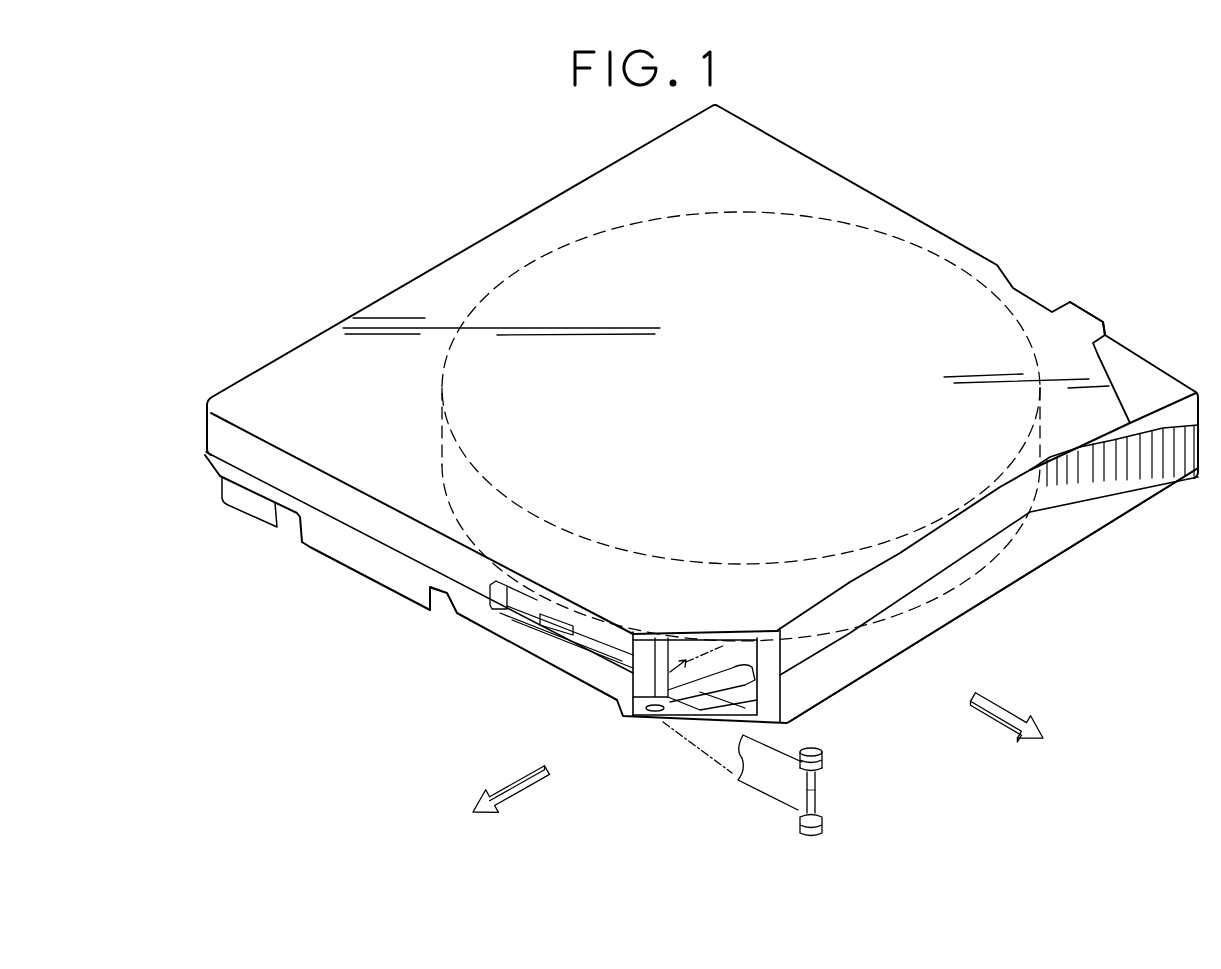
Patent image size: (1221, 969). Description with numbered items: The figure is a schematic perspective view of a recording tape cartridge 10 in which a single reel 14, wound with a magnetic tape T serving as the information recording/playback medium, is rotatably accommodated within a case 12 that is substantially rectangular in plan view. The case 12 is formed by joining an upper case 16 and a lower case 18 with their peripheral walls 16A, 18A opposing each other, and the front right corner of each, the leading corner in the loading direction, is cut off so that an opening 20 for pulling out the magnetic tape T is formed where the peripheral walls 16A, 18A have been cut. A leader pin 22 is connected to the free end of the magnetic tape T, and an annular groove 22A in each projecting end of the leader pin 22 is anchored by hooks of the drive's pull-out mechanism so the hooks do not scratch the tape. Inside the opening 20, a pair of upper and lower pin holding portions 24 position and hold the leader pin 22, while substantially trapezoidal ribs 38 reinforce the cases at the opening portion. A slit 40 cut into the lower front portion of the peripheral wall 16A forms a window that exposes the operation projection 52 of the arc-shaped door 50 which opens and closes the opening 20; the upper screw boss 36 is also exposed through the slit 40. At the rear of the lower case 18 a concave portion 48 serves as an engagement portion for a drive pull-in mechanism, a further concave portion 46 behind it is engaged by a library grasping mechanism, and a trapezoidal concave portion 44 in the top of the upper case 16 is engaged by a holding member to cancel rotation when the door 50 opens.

The recording tape cartridge 10 is at (1006, 72).
The case 12 is at (742, 168).
The reel 14 is at (583, 256).
The upper case 16 is at (1058, 490).
The peripheral wall of upper case 16A is at (205, 422).
The lower case 18 is at (1035, 555).
The peripheral wall of lower case 18A is at (345, 555).
The opening 20 is at (645, 717).
The leader pin 22 is at (832, 741).
The annular groove 22A is at (822, 778).
The pin holding portion 24 is at (747, 673).
The screw boss 36 is at (627, 717).
The rib 38 is at (663, 733).
The slit 40 is at (565, 672).
The concave portion 44 is at (1033, 300).
The concave portion 46 is at (296, 517).
The concave portion 48 is at (440, 603).
The door 50 is at (545, 637).
The operation projection 52 is at (500, 612).
The magnetic tape T is at (773, 787).